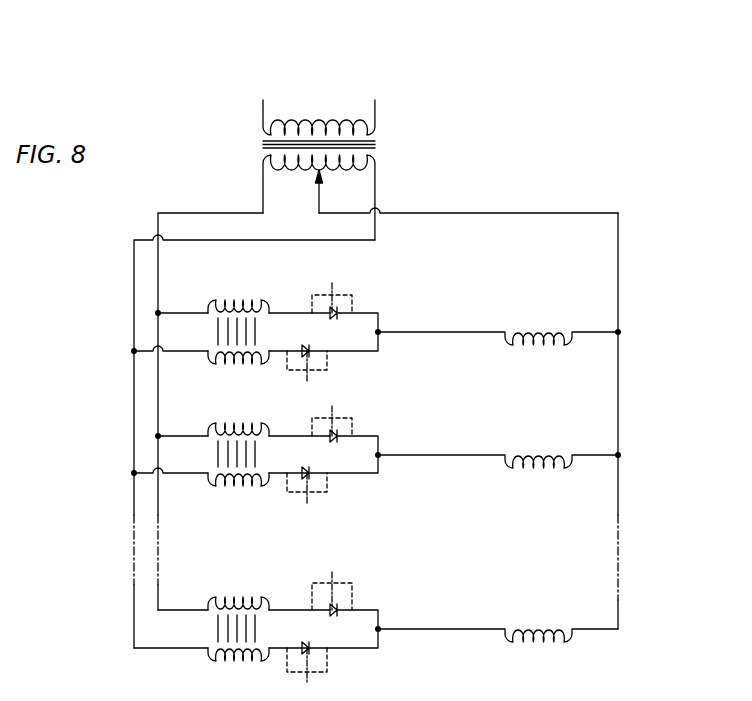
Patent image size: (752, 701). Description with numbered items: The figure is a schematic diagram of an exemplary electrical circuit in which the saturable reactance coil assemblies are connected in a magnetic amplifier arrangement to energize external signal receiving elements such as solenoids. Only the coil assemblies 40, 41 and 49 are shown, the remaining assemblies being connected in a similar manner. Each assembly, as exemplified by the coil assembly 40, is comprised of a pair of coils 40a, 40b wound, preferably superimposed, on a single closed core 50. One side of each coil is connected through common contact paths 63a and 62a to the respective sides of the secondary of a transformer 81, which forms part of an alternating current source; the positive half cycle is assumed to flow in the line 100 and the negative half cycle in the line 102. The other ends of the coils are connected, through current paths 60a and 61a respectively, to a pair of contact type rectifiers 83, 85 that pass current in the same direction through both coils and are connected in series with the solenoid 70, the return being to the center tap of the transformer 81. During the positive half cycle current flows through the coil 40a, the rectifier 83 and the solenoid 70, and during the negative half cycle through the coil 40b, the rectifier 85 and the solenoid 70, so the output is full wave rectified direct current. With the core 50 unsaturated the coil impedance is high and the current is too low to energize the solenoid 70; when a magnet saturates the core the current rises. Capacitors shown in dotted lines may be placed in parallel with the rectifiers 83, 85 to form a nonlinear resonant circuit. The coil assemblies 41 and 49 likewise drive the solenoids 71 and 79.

The transformer 81 is at (375, 147).
The line 100 is at (196, 207).
The line 102 is at (134, 252).
The common contact path 63a is at (180, 310).
The common contact path 62a is at (192, 357).
The coil assembly 40 is at (249, 329).
The coil 40a is at (270, 309).
The coil 40b is at (234, 359).
The closed core 50 is at (257, 332).
The current path 60a is at (297, 312).
The current path 61a is at (272, 357).
The rectifier 83 is at (339, 307).
The rectifier 85 is at (312, 357).
The solenoid 70 is at (541, 331).
The solenoid 71 is at (540, 450).
The solenoid 79 is at (541, 627).
The coil assembly 41 is at (248, 487).
The coil assembly 49 is at (240, 599).